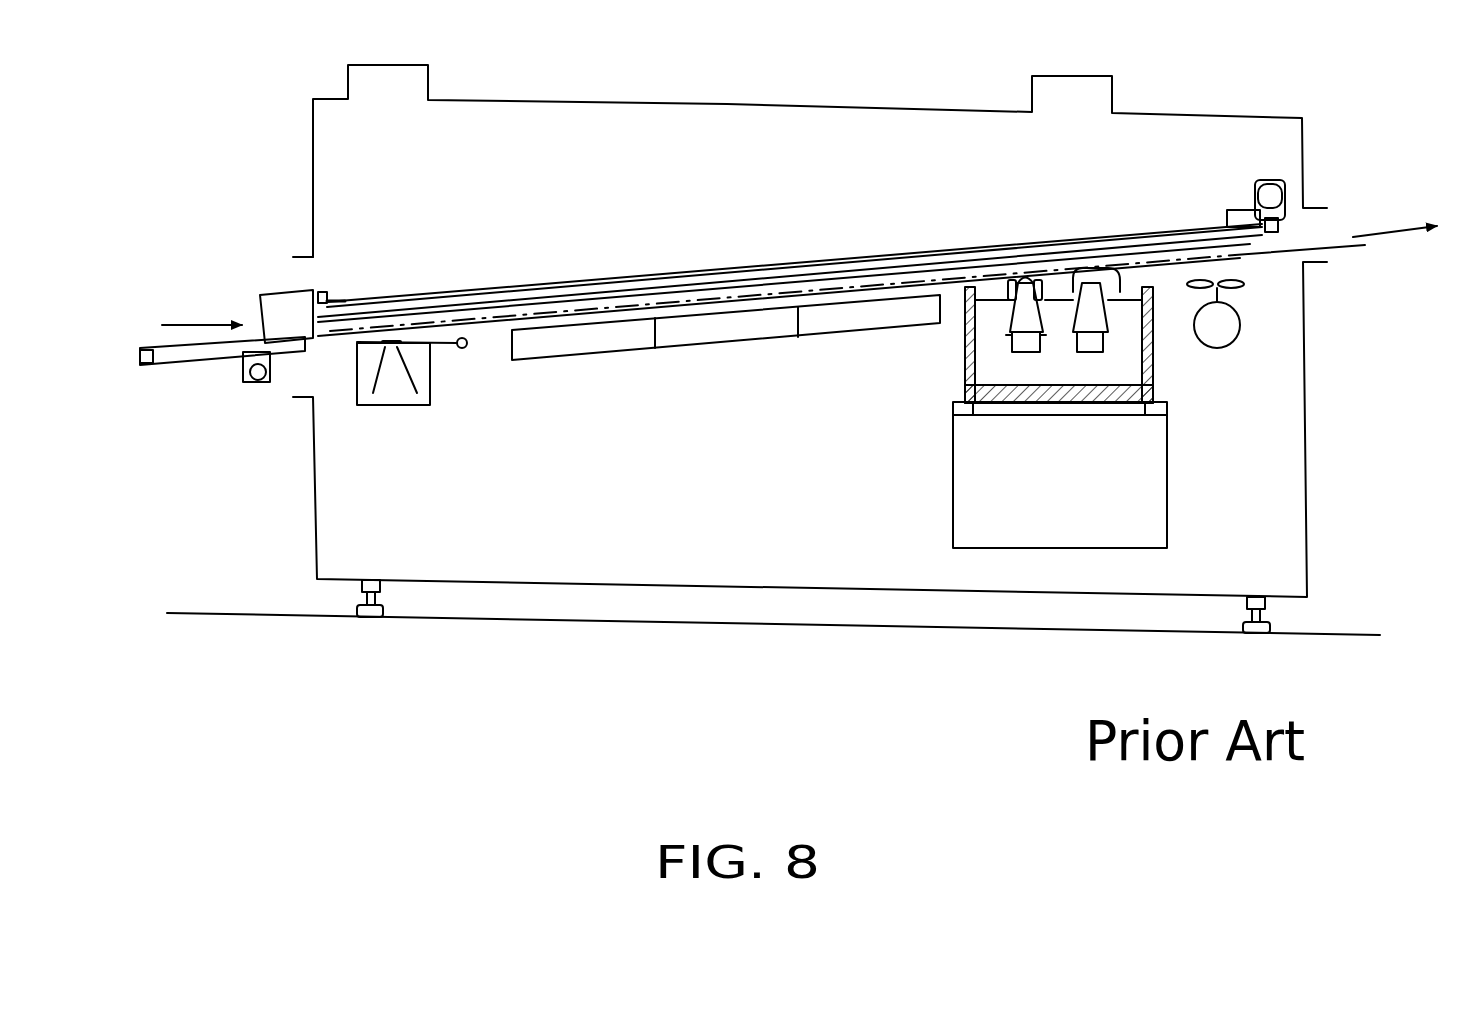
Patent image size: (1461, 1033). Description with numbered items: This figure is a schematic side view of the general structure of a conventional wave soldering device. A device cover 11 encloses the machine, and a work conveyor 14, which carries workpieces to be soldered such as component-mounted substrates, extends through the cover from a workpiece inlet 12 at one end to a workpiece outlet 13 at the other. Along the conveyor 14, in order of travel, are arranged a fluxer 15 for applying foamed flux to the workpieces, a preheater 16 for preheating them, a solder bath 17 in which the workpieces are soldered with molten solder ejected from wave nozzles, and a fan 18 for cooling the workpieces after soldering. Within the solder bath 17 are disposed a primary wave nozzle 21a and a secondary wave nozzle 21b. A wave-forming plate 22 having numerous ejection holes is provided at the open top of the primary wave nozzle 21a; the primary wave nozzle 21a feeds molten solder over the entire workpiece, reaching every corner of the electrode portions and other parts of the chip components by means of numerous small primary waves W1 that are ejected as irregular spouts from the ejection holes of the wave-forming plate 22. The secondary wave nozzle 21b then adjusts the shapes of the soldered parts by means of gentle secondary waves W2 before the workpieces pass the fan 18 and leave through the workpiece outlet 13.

The device cover 11 is at (727, 103).
The workpiece inlet 12 is at (293, 272).
The workpiece outlet 13 is at (1317, 230).
The work conveyor 14 is at (763, 265).
The fluxer 15 is at (393, 407).
The preheater 16 is at (738, 342).
The solder bath 17 is at (962, 356).
The fan 18 is at (1232, 291).
The primary wave nozzle 21a is at (1005, 310).
The secondary wave nozzle 21b is at (1120, 300).
The wave-forming plate 22 is at (1027, 290).
The primary waves W1 is at (1035, 285).
The secondary waves W2 is at (1104, 268).